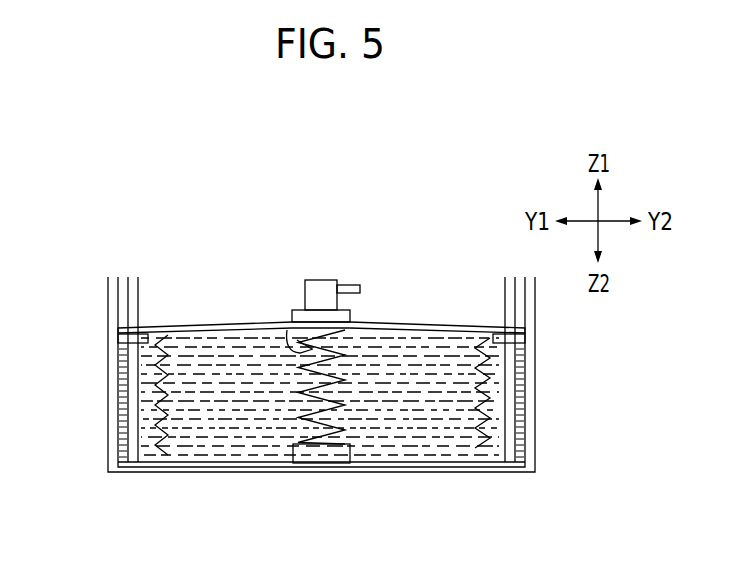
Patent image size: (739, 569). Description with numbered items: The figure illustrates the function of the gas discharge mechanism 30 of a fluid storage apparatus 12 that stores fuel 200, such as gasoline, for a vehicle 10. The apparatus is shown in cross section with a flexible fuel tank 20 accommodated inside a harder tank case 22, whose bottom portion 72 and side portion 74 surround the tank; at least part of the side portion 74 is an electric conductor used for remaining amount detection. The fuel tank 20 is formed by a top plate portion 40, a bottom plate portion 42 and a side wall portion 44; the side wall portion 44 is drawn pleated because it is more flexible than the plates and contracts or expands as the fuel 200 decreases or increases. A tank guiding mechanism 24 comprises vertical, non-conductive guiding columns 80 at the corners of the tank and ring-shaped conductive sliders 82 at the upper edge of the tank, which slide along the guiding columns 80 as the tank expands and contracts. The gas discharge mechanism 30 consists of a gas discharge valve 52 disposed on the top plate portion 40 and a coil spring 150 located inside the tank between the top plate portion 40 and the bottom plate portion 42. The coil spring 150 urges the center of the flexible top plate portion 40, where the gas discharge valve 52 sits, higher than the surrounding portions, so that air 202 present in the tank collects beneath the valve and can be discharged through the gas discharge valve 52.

The vehicle 10 is at (94, 250).
The fluid storage apparatus 12 is at (197, 306).
The flexible fuel tank 20 is at (243, 335).
The tank case 22 is at (153, 518).
The tank guiding mechanism 24 is at (60, 300).
The gas discharge mechanism 30 is at (342, 237).
The top plate portion 40 is at (217, 334).
The bottom plate portion 42 is at (197, 453).
The side wall portion 44 is at (160, 410).
The gas discharge valve 52 is at (317, 280).
The bottom portion 72 is at (136, 470).
The side portion 74 is at (107, 452).
The guiding columns 80 is at (130, 307).
The sliders 82 is at (123, 342).
The coil spring 150 is at (287, 330).
The fuel 200 is at (405, 345).
The air 202 is at (358, 340).